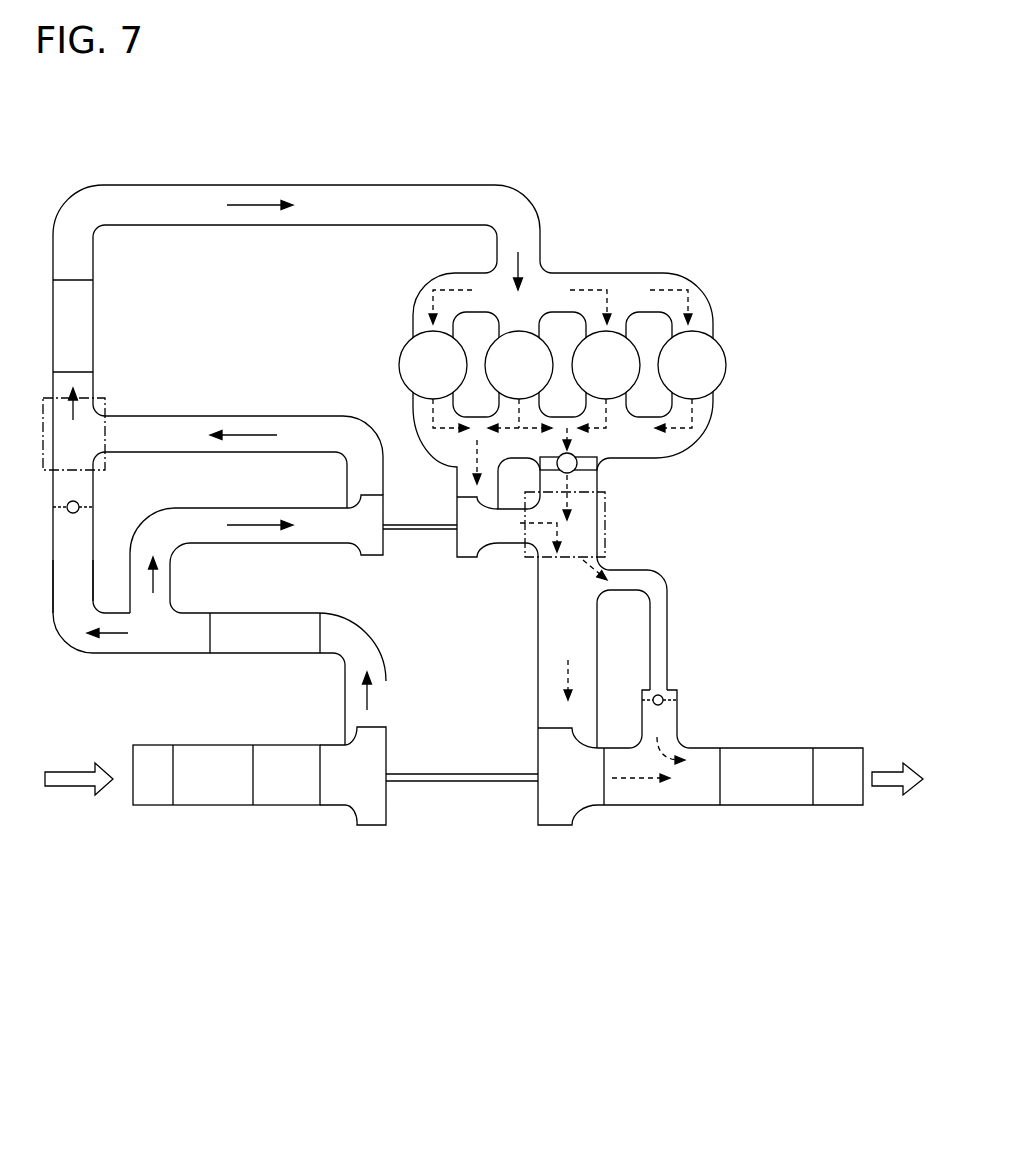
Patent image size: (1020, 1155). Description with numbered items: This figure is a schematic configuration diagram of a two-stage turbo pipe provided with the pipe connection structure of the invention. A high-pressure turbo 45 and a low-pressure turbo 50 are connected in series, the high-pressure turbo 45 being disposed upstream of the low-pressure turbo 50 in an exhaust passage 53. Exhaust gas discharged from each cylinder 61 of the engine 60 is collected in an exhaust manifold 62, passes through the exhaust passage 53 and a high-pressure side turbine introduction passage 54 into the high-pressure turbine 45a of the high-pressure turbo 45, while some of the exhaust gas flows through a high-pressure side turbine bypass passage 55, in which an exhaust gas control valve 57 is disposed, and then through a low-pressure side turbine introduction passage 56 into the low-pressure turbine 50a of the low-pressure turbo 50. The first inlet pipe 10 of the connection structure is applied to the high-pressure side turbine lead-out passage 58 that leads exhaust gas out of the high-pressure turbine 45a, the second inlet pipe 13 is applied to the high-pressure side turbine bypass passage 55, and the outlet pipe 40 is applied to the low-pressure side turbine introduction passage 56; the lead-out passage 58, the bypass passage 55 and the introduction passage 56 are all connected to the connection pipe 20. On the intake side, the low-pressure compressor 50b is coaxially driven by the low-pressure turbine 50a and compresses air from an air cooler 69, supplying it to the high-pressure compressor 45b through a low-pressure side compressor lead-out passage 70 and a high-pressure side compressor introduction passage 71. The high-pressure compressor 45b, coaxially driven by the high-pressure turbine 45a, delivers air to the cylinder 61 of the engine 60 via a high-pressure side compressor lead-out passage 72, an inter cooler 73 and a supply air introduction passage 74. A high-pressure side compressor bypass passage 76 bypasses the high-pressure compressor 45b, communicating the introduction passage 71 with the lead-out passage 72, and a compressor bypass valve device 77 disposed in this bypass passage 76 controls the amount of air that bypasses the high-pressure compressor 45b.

The first inlet pipe 10 is at (238, 456).
The second inlet pipe 13 is at (70, 625).
The connection pipe 20 is at (107, 410).
The outlet pipe 40 is at (142, 424).
The high-pressure turbo 45 is at (422, 579).
The high-pressure turbine 45a is at (462, 557).
The high-pressure compressor 45b is at (372, 557).
The low-pressure turbo 50 is at (495, 856).
The low-pressure turbine 50a is at (548, 827).
The low-pressure compressor 50b is at (360, 827).
The exhaust passage 53 is at (684, 595).
The high-pressure side turbine introduction passage 54 is at (467, 488).
The high-pressure side turbine bypass passage 55 is at (607, 517).
The low-pressure side turbine introduction passage 56 is at (597, 658).
The exhaust gas control valve 57 is at (597, 457).
The high-pressure side turbine lead-out passage 58 is at (500, 545).
The engine 60 is at (565, 338).
The cylinder 61 is at (727, 357).
The exhaust manifold 62 is at (660, 460).
The air cooler 69 is at (213, 785).
The low-pressure side compressor lead-out passage 70 is at (345, 690).
The high-pressure side compressor introduction passage 71 is at (222, 545).
The high-pressure side compressor lead-out passage 72 is at (207, 452).
The inter cooler 73 is at (97, 313).
The supply air introduction passage 74 is at (286, 228).
The high-pressure side compressor bypass passage 76 is at (55, 577).
The compressor bypass valve device 77 is at (62, 512).